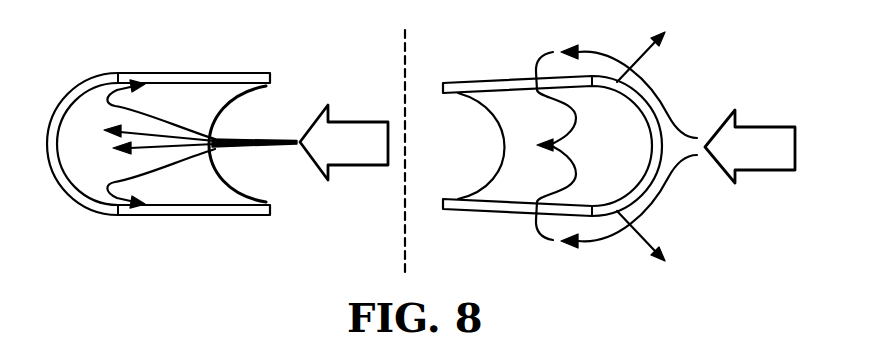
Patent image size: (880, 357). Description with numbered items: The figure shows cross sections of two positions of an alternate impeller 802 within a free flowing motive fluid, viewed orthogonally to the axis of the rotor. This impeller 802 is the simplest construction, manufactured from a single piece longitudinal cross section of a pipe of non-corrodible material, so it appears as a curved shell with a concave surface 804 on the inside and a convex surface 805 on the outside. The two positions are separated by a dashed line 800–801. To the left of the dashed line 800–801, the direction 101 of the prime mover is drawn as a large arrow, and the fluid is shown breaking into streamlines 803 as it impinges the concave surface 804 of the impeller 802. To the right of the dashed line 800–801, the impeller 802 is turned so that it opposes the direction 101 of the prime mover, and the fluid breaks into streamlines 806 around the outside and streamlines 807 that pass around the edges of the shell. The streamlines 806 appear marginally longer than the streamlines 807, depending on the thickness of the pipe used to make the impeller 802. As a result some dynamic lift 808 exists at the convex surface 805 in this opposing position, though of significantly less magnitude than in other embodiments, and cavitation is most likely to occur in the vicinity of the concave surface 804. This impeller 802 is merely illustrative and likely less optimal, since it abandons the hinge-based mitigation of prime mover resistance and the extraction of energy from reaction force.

The direction of the prime mover 101 is at (372, 153).
The dashed line 800 is at (416, 147).
The dashed line 801 is at (386, 143).
The impeller 802 is at (206, 193).
The streamlines 803 is at (270, 139).
The concave surface 804 is at (243, 191).
The convex surface 805 is at (80, 86).
The streamlines 806 is at (647, 84).
The streamlines 807 is at (537, 62).
The dynamic lift 808 is at (664, 36).